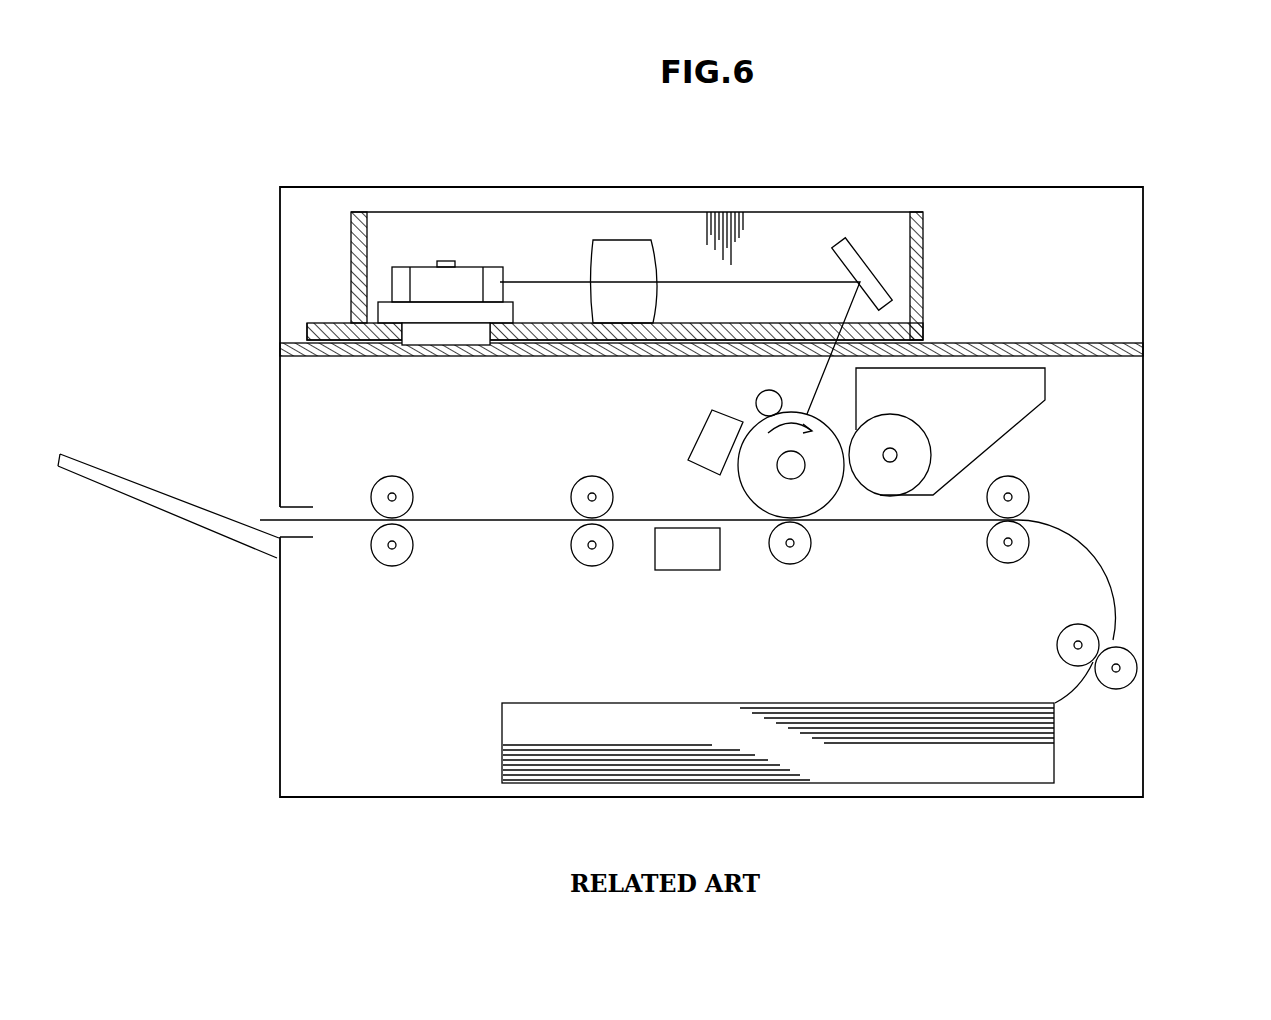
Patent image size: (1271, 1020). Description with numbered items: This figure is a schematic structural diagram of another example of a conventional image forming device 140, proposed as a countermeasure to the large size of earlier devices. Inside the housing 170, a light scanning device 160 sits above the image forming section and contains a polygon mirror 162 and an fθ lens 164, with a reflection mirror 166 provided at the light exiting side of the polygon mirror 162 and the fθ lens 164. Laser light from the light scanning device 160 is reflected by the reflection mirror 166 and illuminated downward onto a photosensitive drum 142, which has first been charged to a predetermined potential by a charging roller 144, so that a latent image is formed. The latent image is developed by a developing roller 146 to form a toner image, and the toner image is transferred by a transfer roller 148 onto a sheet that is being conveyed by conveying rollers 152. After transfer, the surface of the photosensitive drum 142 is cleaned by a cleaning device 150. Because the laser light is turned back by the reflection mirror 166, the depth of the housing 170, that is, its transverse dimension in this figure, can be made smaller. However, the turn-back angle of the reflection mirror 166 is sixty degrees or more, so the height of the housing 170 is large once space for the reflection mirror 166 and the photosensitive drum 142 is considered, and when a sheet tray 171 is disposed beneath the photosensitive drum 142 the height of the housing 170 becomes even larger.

The image forming device 140 is at (1158, 386).
The photosensitive drum 142 is at (833, 513).
The charging roller 144 is at (757, 395).
The developing roller 146 is at (925, 428).
The transfer roller 148 is at (783, 563).
The cleaning device 150 is at (700, 432).
The conveying rollers 152 is at (383, 566).
The light scanning device 160 is at (923, 241).
The polygon mirror 162 is at (462, 267).
The fθ lens 164 is at (622, 239).
The reflection mirror 166 is at (872, 247).
The housing 170 is at (1143, 527).
The sheet tray 171 is at (1055, 757).